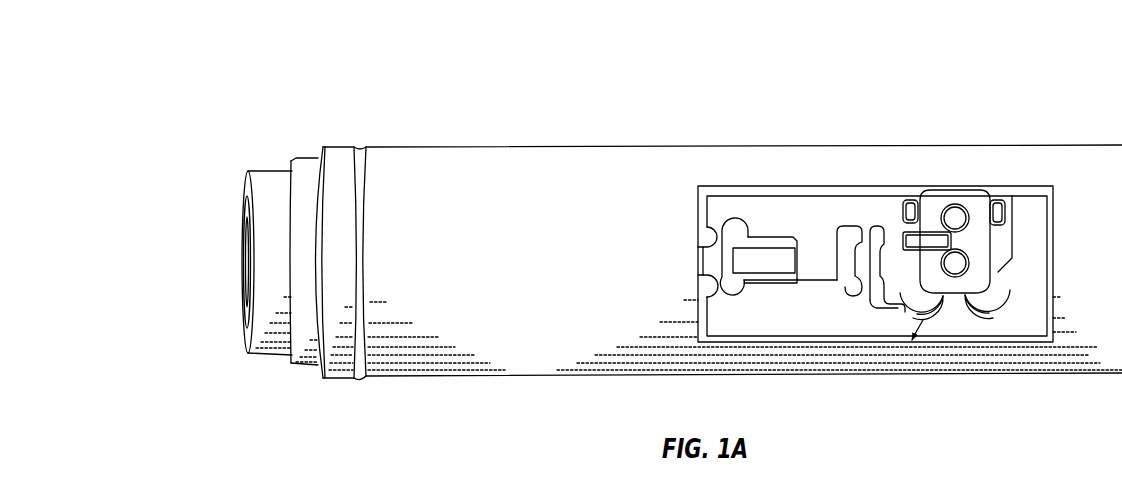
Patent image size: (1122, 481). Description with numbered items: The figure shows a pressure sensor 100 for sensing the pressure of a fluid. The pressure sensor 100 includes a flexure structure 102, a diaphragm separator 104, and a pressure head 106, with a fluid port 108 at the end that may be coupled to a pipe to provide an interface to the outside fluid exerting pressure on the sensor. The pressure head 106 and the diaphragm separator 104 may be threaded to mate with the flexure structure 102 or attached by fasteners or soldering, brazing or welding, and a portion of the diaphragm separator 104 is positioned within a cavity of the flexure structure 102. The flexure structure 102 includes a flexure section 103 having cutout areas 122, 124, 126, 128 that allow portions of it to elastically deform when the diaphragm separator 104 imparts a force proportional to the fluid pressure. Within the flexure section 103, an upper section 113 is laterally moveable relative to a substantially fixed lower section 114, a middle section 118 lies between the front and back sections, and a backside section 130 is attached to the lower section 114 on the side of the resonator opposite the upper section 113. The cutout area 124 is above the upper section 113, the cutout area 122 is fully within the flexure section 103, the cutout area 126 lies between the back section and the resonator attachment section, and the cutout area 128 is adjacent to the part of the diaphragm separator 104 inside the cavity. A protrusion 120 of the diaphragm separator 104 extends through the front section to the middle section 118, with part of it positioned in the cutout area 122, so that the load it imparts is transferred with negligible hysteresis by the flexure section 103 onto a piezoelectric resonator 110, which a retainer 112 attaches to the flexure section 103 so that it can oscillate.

The pressure sensor 100 is at (228, 97).
The flexure structure 102 is at (508, 160).
The flexure section 103 is at (727, 327).
The diaphragm separator 104 is at (303, 163).
The pressure head 106 is at (268, 170).
The fluid port 108 is at (245, 257).
The piezoelectric resonator 110 is at (972, 192).
The retainer 112 is at (923, 230).
The upper section 113 is at (808, 196).
The lower section 114 is at (825, 318).
The middle section 118 is at (823, 265).
The protrusion 120 is at (750, 265).
The cutout area 122 is at (787, 288).
The cutout area 124 is at (752, 187).
The cutout area 126 is at (891, 259).
The cutout area 128 is at (712, 236).
The backside section 130 is at (1031, 279).